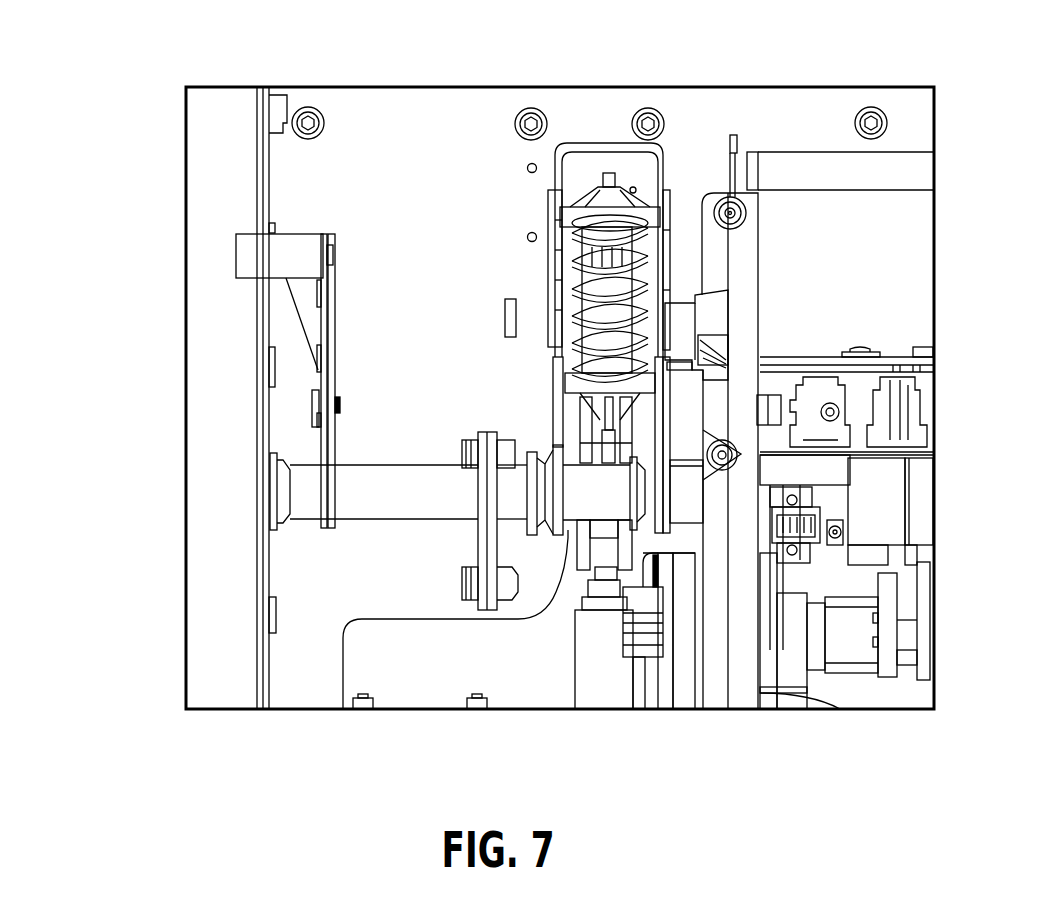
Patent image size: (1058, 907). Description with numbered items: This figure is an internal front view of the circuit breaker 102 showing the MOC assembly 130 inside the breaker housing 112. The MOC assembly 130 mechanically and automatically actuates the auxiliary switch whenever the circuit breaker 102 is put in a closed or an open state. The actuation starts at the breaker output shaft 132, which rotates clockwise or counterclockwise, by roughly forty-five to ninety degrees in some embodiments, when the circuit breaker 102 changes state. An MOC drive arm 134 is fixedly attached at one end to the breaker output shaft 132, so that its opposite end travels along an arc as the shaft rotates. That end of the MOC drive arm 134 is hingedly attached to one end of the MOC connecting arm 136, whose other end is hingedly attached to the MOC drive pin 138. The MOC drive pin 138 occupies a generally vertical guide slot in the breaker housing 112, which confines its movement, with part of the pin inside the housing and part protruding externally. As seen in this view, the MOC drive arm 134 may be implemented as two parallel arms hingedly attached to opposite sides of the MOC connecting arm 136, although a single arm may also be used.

The circuit breaker 102 is at (743, 66).
The breaker housing 112 is at (257, 145).
The MOC assembly 130 is at (360, 537).
The breaker output shaft 132 is at (402, 478).
The MOC drive arm 134 is at (318, 451).
The MOC connecting arm 136 is at (334, 298).
The MOC drive pin 138 is at (236, 262).